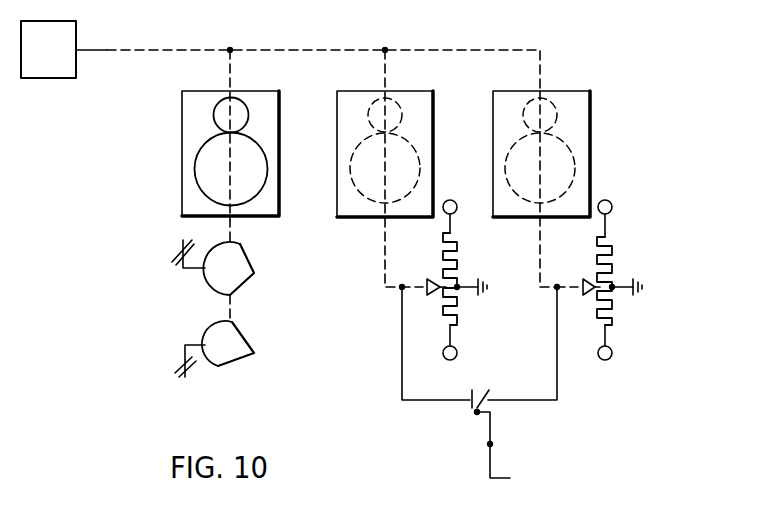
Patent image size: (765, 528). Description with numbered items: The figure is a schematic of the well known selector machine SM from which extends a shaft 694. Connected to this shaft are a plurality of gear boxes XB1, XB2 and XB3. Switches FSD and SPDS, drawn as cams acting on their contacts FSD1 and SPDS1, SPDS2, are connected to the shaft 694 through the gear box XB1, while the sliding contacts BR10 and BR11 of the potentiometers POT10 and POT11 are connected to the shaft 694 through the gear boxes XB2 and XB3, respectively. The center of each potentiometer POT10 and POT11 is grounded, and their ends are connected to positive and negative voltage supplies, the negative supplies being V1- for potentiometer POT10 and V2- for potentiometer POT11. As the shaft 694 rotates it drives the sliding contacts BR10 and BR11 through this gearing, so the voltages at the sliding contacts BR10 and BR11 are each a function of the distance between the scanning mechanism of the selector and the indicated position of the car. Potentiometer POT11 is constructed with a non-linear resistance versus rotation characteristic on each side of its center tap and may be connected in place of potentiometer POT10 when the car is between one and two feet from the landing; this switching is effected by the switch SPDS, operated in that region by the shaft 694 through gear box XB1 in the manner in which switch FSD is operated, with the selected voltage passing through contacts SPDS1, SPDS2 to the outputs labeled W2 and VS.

The shaft 694 is at (107, 49).
The selector machine SM is at (48, 49).
The gear box XB1 is at (185, 132).
The gear box XB2 is at (338, 117).
The gear box XB3 is at (493, 117).
The switch FSD is at (155, 267).
The switch contact FSD1 is at (181, 245).
The switch SPDS is at (205, 345).
The switch contact SPDS1 is at (185, 377).
The switch contact SPDS2 is at (188, 377).
The negative voltage supply V1- is at (475, 353).
The negative voltage supply V2- is at (631, 353).
The potentiometer POT10 is at (490, 255).
The potentiometer POT11 is at (648, 256).
The sliding contact BR10 is at (426, 291).
The sliding contact BR11 is at (566, 290).
The winding W2 output W2 is at (490, 444).
The voltage source VS output VS is at (585, 470).